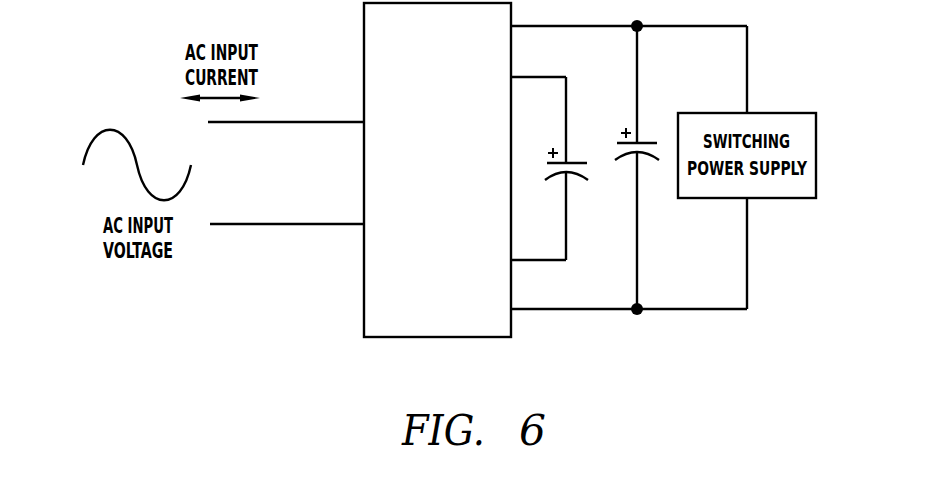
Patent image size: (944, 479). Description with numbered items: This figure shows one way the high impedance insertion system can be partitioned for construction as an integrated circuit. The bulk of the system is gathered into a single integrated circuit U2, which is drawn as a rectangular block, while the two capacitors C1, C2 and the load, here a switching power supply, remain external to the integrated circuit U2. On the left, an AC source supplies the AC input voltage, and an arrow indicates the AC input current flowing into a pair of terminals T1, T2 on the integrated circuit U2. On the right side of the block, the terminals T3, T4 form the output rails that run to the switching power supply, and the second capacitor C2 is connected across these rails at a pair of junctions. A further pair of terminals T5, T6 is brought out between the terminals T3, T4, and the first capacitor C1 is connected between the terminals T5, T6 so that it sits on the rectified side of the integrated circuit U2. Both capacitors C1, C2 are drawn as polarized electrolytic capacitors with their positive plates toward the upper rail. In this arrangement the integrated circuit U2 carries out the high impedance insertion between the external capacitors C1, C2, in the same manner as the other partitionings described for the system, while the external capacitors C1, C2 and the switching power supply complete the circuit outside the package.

The integrated circuit U2 is at (437, 170).
The AC input terminal 1 T1 is at (286, 109).
The AC input terminal 2 T2 is at (287, 211).
The output terminal 3 T3 is at (629, 16).
The output terminal 4 T4 is at (629, 298).
The capacitor terminal 5 T5 is at (538, 248).
The capacitor terminal 6 T6 is at (538, 65).
The capacitor C1 is at (566, 168).
The capacitor C2 is at (637, 167).